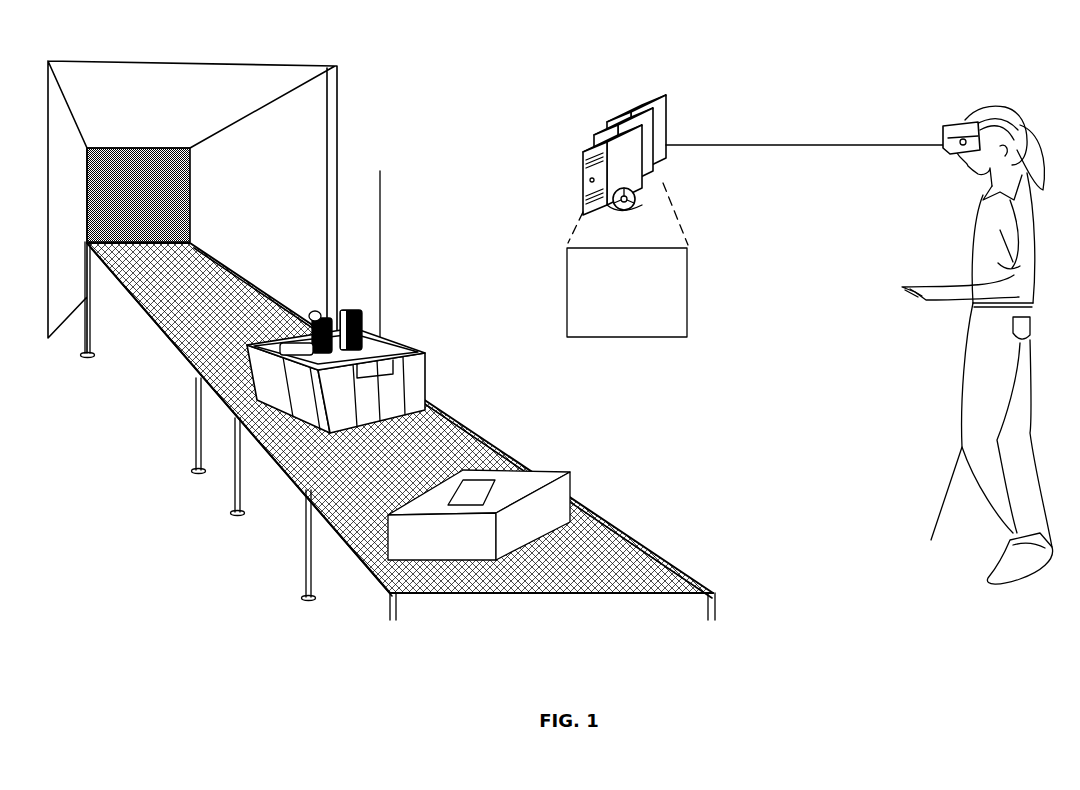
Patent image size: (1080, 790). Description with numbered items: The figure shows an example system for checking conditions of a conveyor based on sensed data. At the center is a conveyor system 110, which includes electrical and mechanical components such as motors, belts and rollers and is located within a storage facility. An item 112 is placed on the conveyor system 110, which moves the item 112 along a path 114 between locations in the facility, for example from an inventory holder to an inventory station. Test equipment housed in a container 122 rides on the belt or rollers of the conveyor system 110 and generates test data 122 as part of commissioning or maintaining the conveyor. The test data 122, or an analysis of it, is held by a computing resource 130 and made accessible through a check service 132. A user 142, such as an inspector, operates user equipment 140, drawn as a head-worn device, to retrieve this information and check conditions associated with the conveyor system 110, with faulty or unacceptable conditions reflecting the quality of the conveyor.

The conveyor system 110 is at (170, 345).
The item 112 is at (458, 548).
The path 114 is at (370, 479).
The test data 122 is at (252, 347).
The computing resource 130 is at (603, 122).
The check service 132 is at (627, 260).
The user equipment 140 is at (953, 155).
The user 142 is at (932, 538).